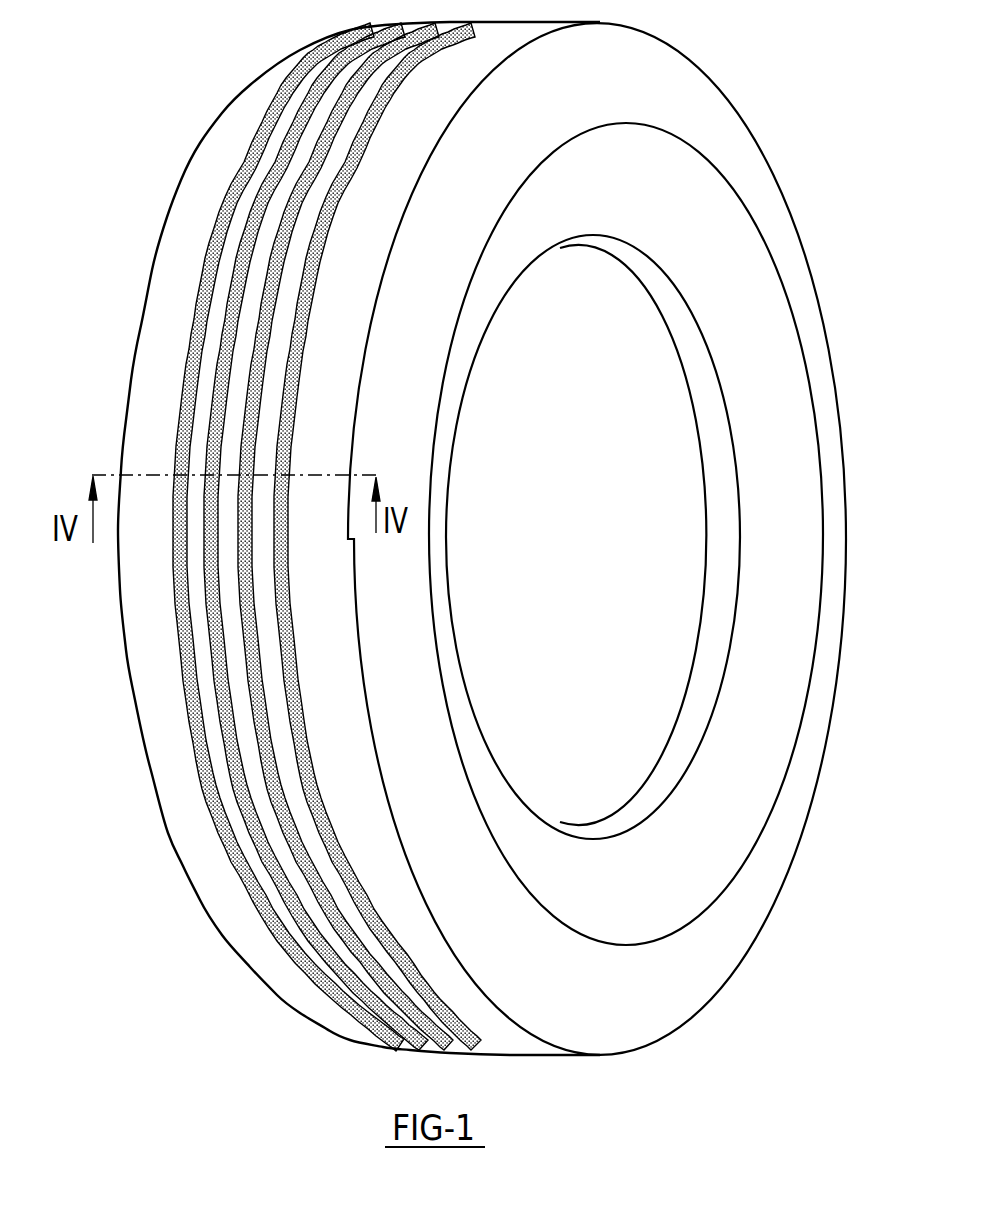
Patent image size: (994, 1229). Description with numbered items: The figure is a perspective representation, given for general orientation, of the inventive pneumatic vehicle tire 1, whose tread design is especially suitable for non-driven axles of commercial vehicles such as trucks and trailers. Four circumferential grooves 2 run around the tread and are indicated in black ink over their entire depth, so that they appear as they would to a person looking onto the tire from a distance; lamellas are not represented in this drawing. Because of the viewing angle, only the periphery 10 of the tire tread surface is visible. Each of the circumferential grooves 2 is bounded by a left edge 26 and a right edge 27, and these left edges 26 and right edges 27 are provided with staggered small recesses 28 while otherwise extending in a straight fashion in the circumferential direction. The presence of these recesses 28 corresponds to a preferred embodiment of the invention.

The pneumatic vehicle tire 1 is at (443, 536).
The circumferential grooves 2 is at (320, 538).
The periphery of the tire tread surface 10 is at (333, 385).
The left edges 26 is at (287, 717).
The right edges 27 is at (260, 537).
The staggered small recesses 28 is at (260, 537).